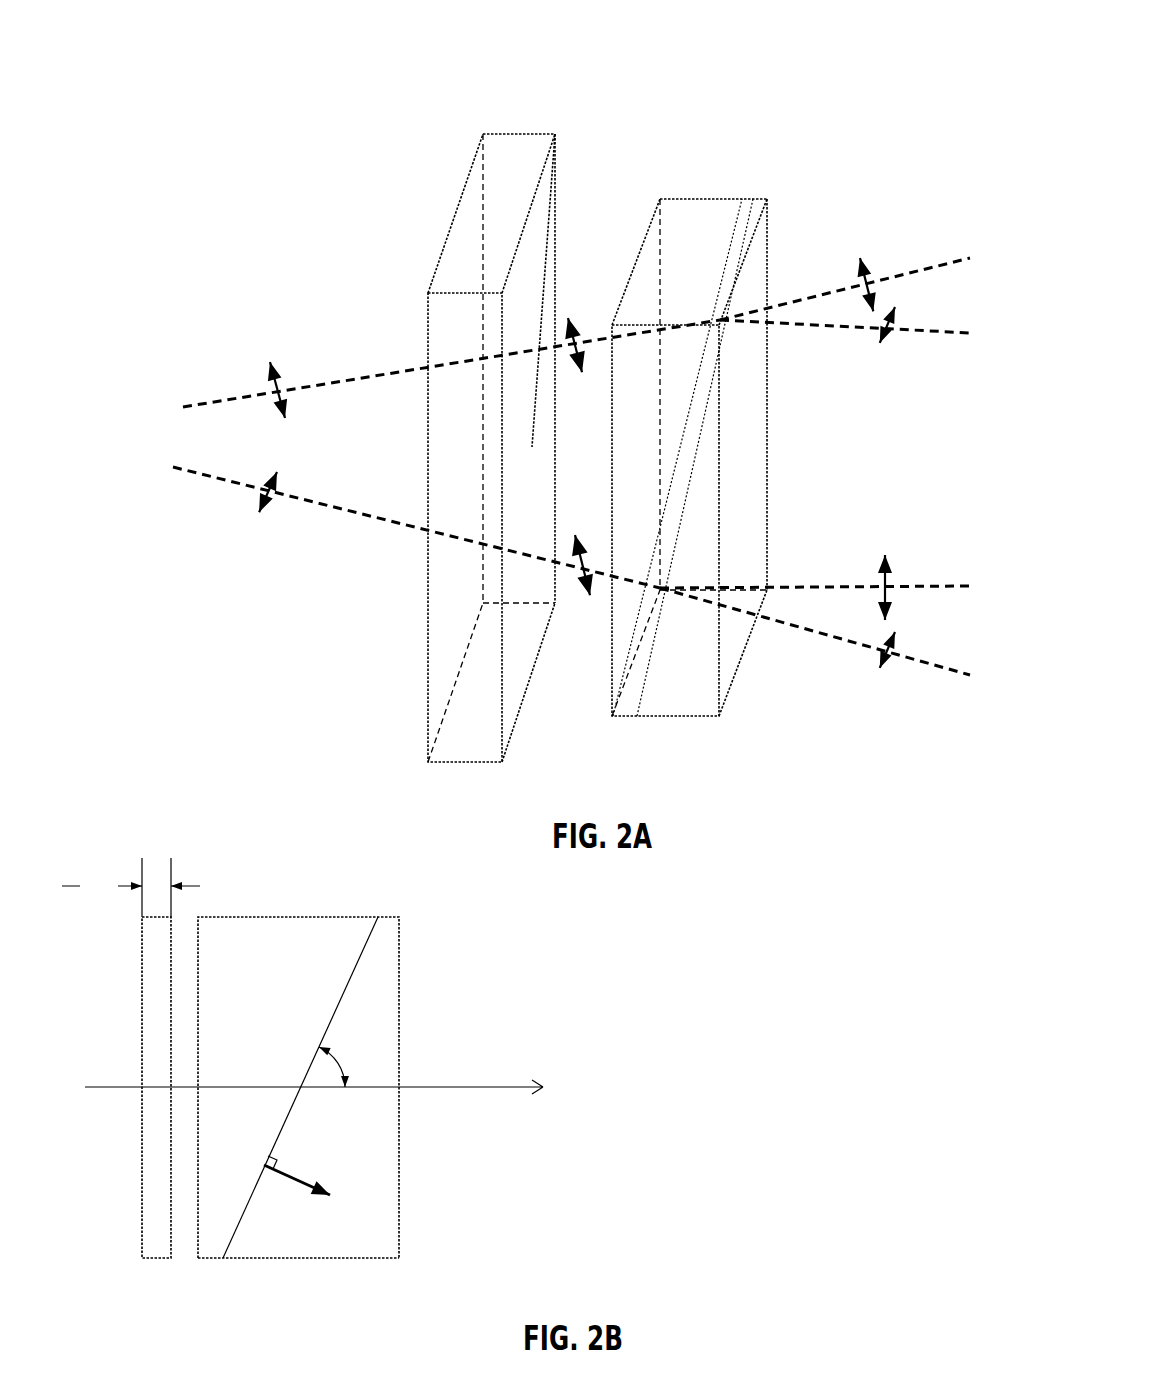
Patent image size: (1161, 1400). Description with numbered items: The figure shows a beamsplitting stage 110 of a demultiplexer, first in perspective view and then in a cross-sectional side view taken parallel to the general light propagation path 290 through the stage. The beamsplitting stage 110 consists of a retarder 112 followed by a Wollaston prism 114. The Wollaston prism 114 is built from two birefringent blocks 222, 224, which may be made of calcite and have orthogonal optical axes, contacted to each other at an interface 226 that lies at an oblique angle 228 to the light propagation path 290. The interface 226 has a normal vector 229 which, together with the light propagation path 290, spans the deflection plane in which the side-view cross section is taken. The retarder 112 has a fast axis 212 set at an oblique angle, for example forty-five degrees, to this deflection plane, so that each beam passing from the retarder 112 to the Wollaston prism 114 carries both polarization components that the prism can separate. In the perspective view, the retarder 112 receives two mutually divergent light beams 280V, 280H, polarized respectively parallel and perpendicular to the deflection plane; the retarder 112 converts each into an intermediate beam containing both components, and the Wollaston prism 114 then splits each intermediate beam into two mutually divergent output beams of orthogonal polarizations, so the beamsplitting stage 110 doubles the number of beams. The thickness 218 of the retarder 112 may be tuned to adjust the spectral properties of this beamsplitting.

In FIG. 2A, the beamsplitting stage 110 is at (571, 421).
In FIG. 2B, the beamsplitting stage 110 is at (300, 1048).
In FIG. 2A, the retarder 112 is at (469, 762).
In FIG. 2B, the retarder 112 is at (158, 1258).
In FIG. 2A, the Wollaston prism 114 is at (726, 476).
In FIG. 2B, the Wollaston prism 114 is at (336, 1094).
In FIG. 2A, the fast axis 212 is at (537, 412).
In FIG. 2B, the thickness 218 is at (131, 887).
In FIG. 2A, the birefringent block 222 is at (684, 199).
In FIG. 2B, the birefringent block 222 is at (300, 1060).
In FIG. 2A, the birefringent block 224 is at (768, 240).
In FIG. 2B, the birefringent block 224 is at (340, 1258).
In FIG. 2A, the interface 226 is at (677, 427).
In FIG. 2B, the oblique angle 228 is at (340, 1056).
In FIG. 2B, the normal vector 229 is at (292, 1178).
In FIG. 2A, the light beam 280V is at (335, 382).
In FIG. 2A, the light beam 280H is at (345, 508).
In FIG. 2B, the light propagation path 290 is at (495, 1090).